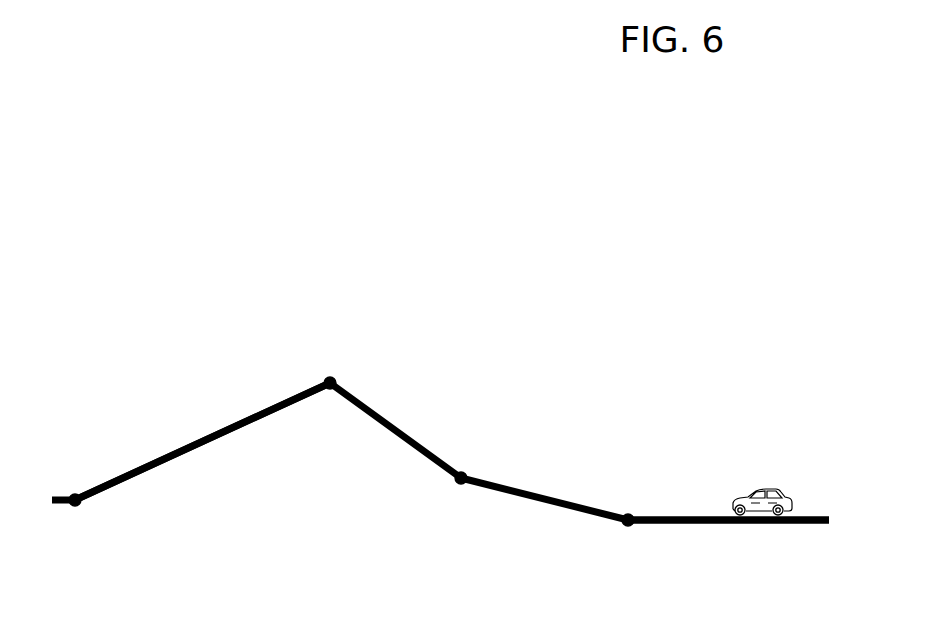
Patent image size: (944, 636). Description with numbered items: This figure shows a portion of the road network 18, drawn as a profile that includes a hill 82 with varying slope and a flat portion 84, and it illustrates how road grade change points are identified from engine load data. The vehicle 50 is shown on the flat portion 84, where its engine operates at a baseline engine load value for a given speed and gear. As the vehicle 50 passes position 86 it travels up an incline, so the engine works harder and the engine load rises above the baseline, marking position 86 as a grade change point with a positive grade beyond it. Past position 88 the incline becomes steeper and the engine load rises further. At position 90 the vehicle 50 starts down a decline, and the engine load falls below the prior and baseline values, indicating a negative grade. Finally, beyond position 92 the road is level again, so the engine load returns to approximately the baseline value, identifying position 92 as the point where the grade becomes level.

The road network 18 is at (522, 527).
The vehicle 50 is at (728, 475).
The hill 82 is at (270, 438).
The flat portion 84 is at (695, 533).
The position 86 is at (624, 501).
The position 88 is at (466, 460).
The position 90 is at (337, 364).
The position 92 is at (79, 481).